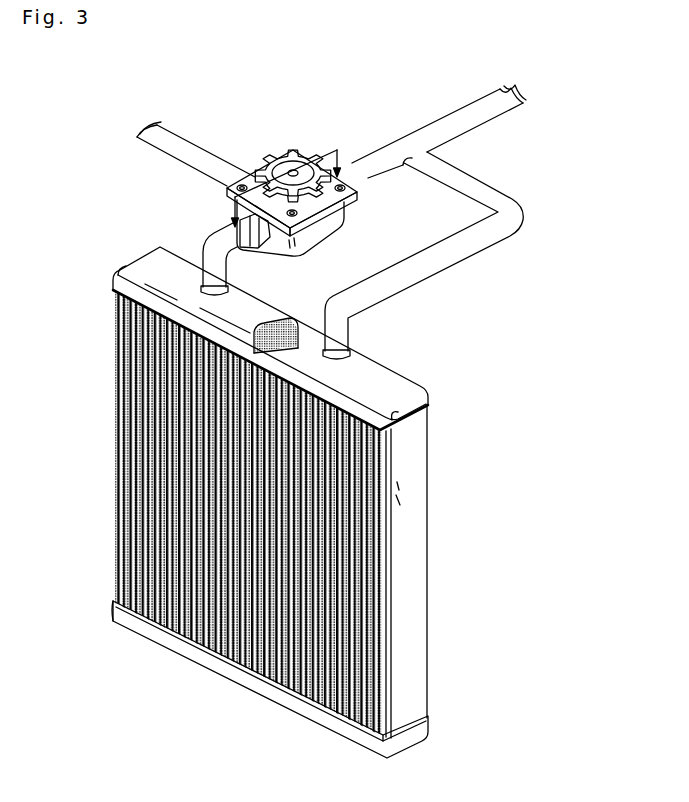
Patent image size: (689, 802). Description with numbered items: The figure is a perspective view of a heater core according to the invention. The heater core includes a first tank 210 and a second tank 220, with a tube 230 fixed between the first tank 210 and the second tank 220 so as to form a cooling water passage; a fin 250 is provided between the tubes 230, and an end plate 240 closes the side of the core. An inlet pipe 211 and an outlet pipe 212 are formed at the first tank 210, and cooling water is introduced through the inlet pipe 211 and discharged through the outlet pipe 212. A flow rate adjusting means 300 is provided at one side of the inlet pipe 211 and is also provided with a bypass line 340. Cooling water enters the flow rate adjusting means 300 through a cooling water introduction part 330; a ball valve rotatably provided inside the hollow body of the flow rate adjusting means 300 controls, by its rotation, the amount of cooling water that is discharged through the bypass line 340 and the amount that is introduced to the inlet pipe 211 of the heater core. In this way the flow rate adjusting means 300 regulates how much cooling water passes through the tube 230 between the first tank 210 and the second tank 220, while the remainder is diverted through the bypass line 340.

The first tank 210 is at (413, 396).
The inlet pipe 211 is at (220, 260).
The outlet pipe 212 is at (337, 315).
The second tank 220 is at (312, 718).
The tube 230 is at (143, 521).
The end plate 240 is at (415, 570).
The fin 250 is at (147, 426).
The flow rate adjusting means 300 is at (281, 137).
The cooling water introduction part 330 is at (237, 177).
The bypass line 340 is at (368, 167).